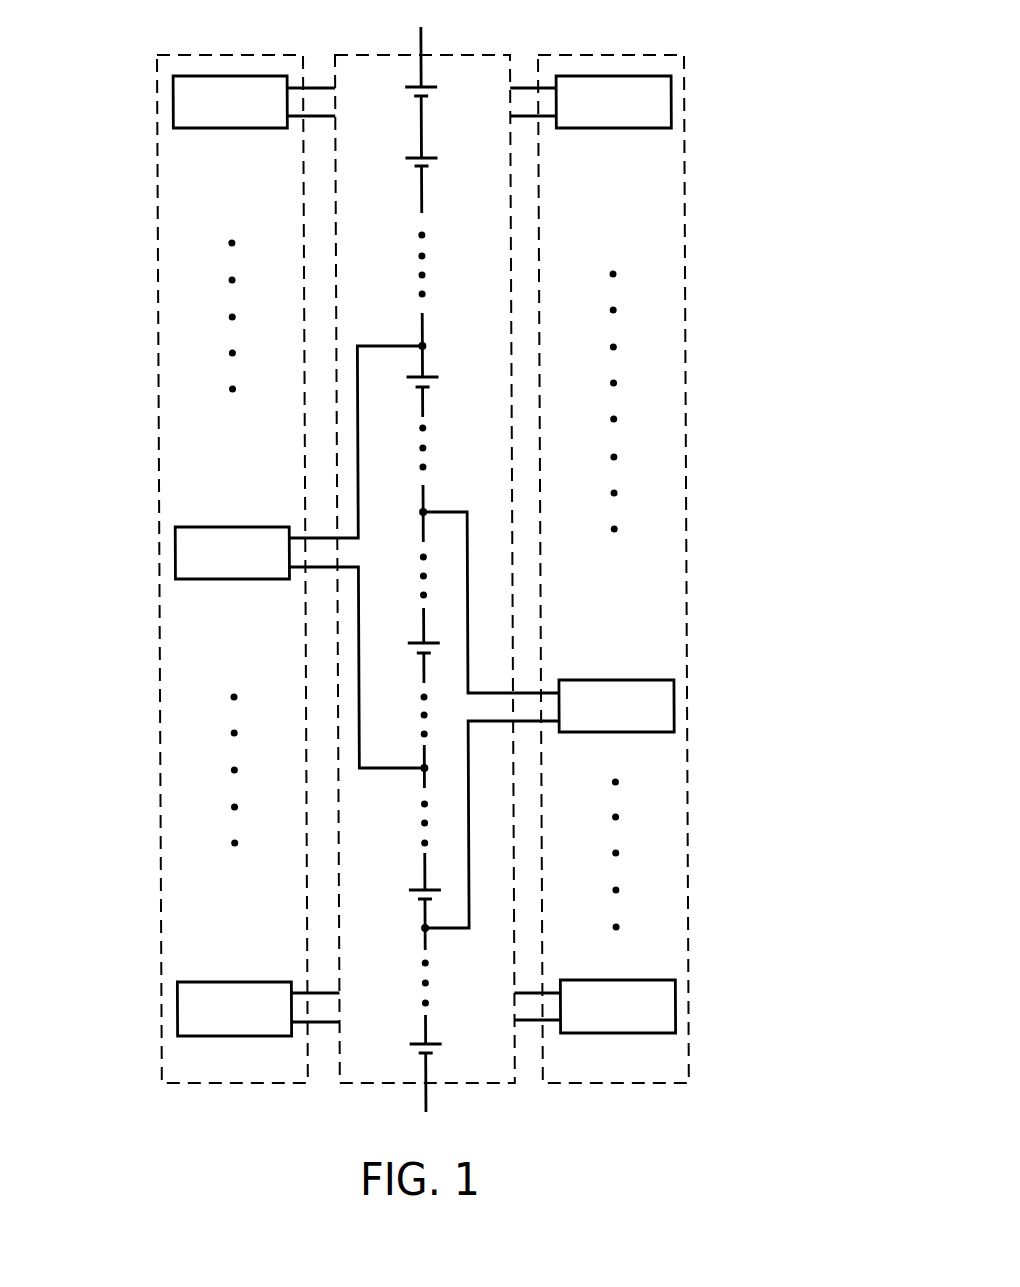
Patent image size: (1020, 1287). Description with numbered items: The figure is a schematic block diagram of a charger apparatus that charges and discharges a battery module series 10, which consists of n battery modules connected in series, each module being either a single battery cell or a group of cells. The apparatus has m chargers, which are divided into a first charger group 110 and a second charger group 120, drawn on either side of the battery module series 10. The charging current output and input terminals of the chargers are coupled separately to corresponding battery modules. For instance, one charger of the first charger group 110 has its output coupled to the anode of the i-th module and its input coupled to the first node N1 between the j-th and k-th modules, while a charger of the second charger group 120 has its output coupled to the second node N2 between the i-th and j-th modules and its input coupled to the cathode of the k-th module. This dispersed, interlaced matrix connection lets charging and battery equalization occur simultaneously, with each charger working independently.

The first charger group 110 is at (238, 55).
The second charger group 120 is at (622, 55).
The battery module series 10 is at (487, 55).
The first node N1 is at (440, 767).
The second node N2 is at (406, 509).